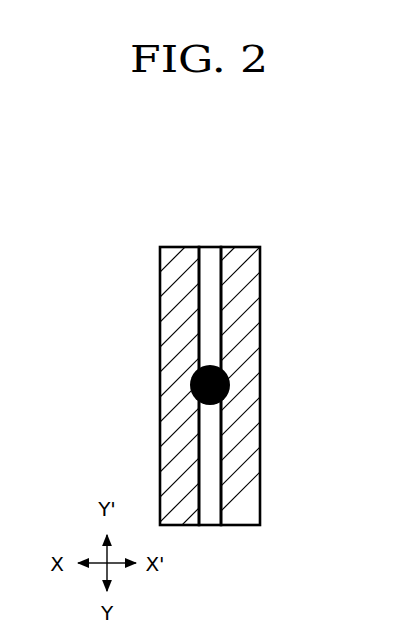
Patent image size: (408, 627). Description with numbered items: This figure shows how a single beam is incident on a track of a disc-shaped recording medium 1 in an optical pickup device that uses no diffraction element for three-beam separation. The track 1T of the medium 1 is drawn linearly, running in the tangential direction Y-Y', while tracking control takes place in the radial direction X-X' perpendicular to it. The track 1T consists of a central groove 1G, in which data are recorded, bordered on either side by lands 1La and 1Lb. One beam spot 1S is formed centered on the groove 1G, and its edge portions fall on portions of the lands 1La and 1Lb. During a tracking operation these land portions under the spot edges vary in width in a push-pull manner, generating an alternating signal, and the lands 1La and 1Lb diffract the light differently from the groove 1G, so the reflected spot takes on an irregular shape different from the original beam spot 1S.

The medium 1 is at (306, 254).
The track 1T is at (146, 177).
The land 1La is at (174, 252).
The groove 1G is at (209, 252).
The land 1Lb is at (250, 252).
The beam spot 1S is at (228, 383).